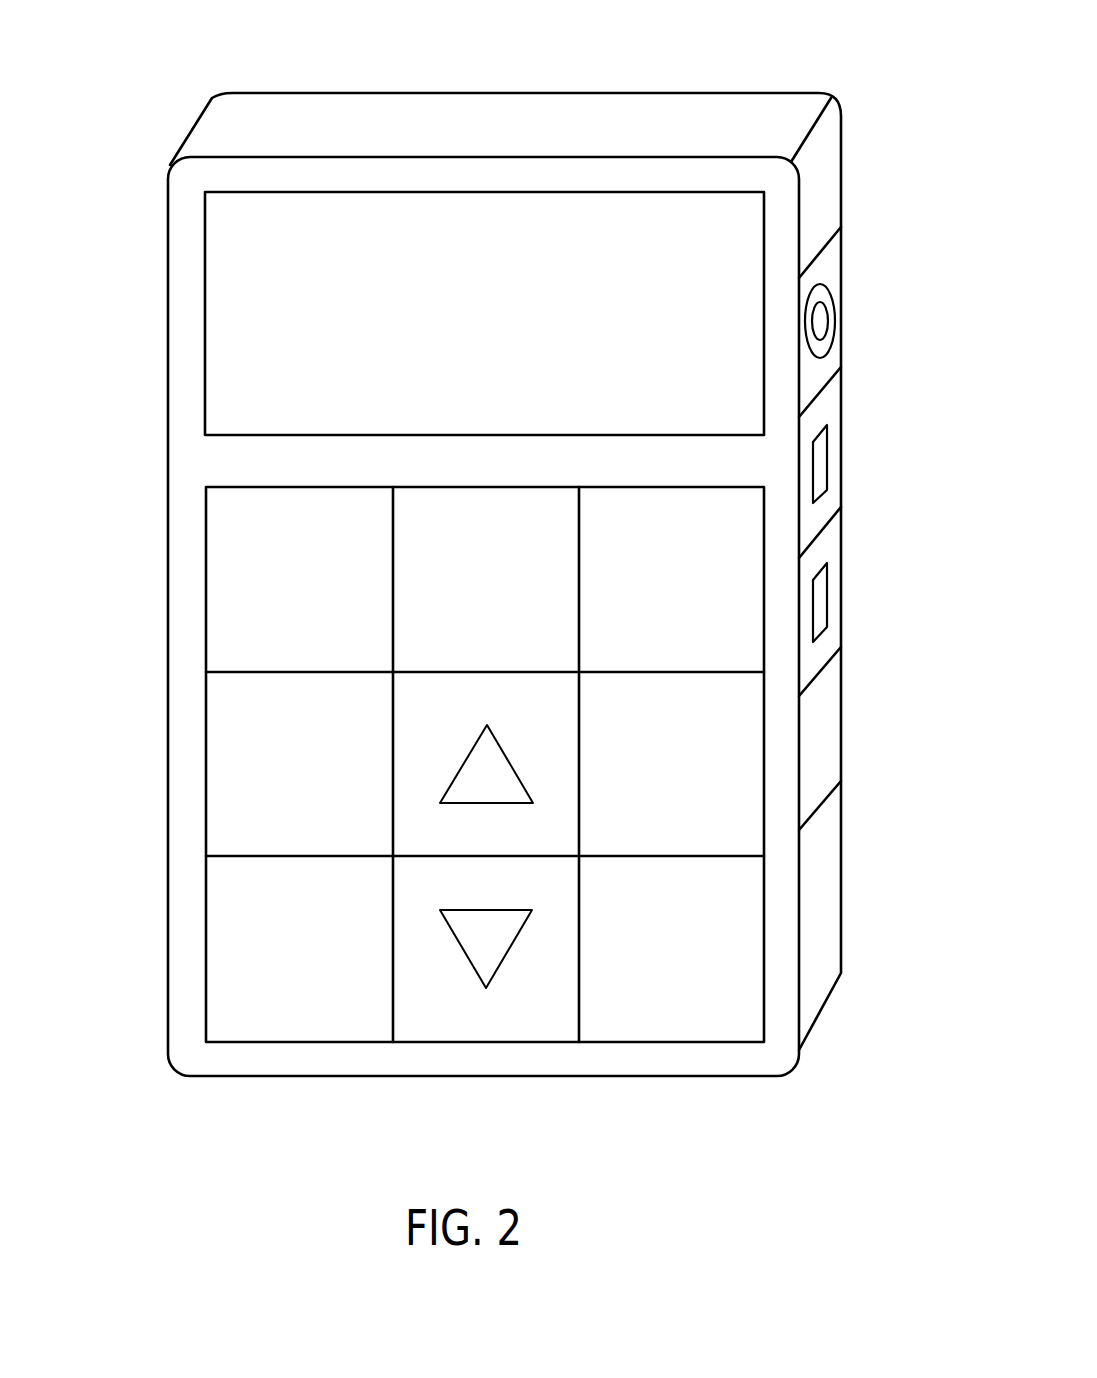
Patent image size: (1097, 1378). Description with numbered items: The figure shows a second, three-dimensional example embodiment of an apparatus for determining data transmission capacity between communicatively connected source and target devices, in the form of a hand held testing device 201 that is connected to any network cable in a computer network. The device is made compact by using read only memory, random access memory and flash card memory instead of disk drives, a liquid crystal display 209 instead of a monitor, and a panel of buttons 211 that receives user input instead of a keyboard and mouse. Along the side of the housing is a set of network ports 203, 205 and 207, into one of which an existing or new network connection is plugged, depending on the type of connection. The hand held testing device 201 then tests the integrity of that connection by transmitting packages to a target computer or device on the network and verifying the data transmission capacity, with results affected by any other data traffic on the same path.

The hand held testing device 201 is at (775, 92).
The network port 203 is at (842, 287).
The network port 205 is at (842, 427).
The network port 207 is at (842, 577).
The liquid crystal display 209 is at (205, 345).
The panel of buttons 211 is at (206, 583).